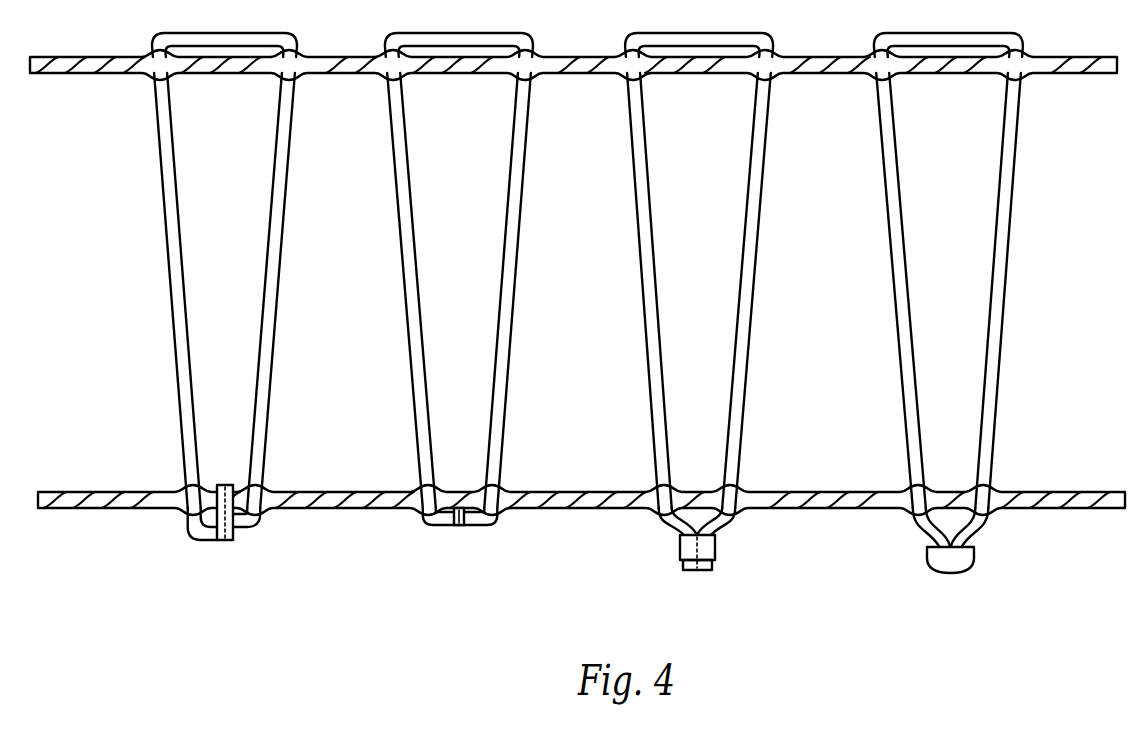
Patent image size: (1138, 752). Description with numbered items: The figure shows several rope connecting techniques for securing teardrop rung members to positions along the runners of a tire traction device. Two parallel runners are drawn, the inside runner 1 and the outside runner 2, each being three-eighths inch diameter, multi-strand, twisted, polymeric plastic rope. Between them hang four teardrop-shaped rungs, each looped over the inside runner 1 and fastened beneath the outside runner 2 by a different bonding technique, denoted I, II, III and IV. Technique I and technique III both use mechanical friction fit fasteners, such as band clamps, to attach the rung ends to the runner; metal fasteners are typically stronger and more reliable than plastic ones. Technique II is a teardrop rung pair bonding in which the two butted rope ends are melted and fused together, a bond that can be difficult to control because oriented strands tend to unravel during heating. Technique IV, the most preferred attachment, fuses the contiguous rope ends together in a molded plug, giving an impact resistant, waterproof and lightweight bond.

The inside runner 1 is at (340, 56).
The outside runner 2 is at (352, 508).
The rung bonding technique I is at (224, 304).
The rung bonding technique II is at (459, 304).
The rung bonding technique III is at (699, 321).
The rung bonding technique IV is at (948, 321).